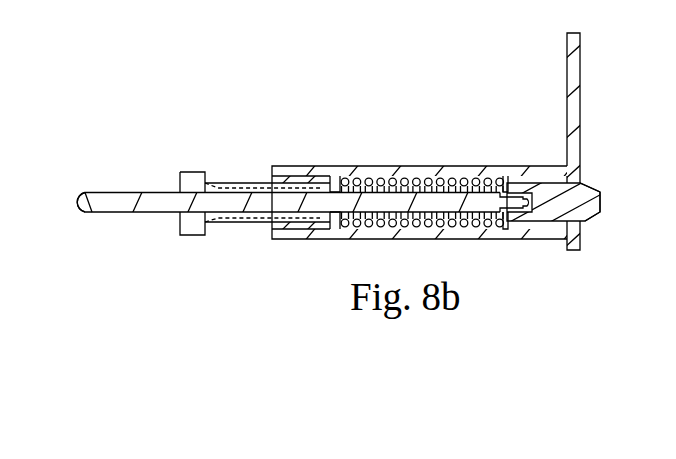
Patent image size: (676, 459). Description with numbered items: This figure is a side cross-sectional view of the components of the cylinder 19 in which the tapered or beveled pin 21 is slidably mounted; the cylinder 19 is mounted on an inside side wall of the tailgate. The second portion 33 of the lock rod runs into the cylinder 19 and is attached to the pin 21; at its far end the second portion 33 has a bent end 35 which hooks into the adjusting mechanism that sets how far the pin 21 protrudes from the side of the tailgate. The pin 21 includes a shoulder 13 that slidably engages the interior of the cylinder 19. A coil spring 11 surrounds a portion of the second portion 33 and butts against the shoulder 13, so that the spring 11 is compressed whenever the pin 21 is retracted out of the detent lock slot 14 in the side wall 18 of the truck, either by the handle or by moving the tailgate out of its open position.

The coil spring 11 is at (442, 177).
The shoulder 13 is at (540, 183).
The detent lock slot 14 is at (585, 181).
The side wall 18 is at (574, 108).
The cylinder 19 is at (298, 165).
The tapered pin 21 is at (588, 207).
The second portion of the lock rod 33 is at (162, 200).
The bent end 35 is at (79, 190).